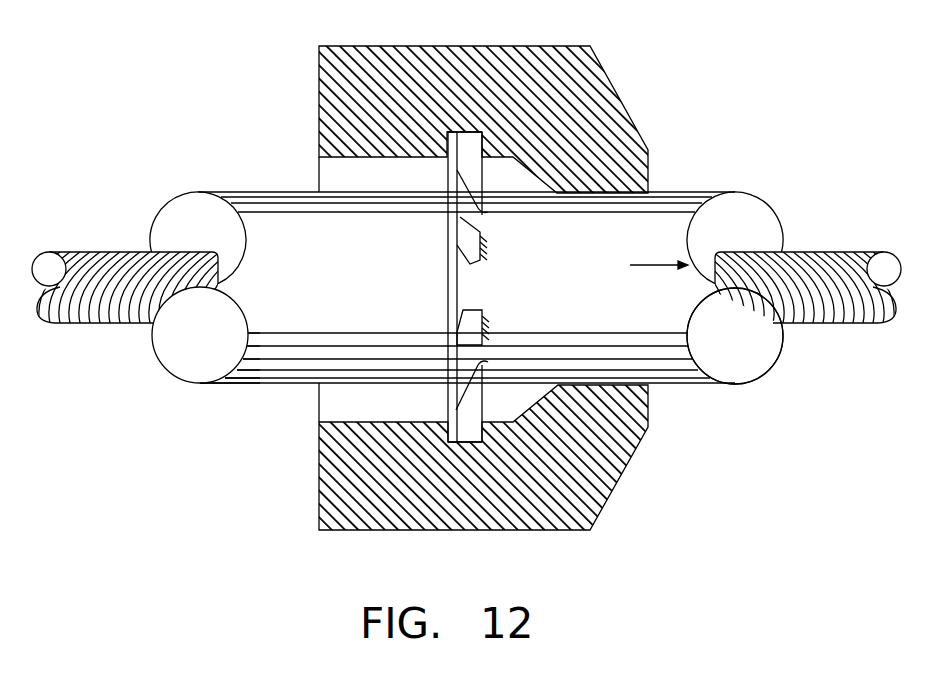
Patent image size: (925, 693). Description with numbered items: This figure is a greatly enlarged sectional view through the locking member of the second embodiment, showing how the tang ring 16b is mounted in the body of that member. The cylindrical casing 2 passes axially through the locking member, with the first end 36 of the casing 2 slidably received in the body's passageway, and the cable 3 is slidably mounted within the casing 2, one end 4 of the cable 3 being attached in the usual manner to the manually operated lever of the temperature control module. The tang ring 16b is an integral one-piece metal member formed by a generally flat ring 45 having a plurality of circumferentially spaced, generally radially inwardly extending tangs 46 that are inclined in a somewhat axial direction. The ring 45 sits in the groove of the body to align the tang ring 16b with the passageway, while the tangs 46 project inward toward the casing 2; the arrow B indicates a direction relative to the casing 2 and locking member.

The casing 2 is at (228, 192).
The cable 3 is at (139, 315).
The end of cable 4 is at (97, 305).
The first end of casing 36 is at (182, 362).
The tang ring 16b is at (445, 130).
The ring 45 is at (452, 284).
The tangs 46 is at (487, 250).
The direction B is at (649, 266).